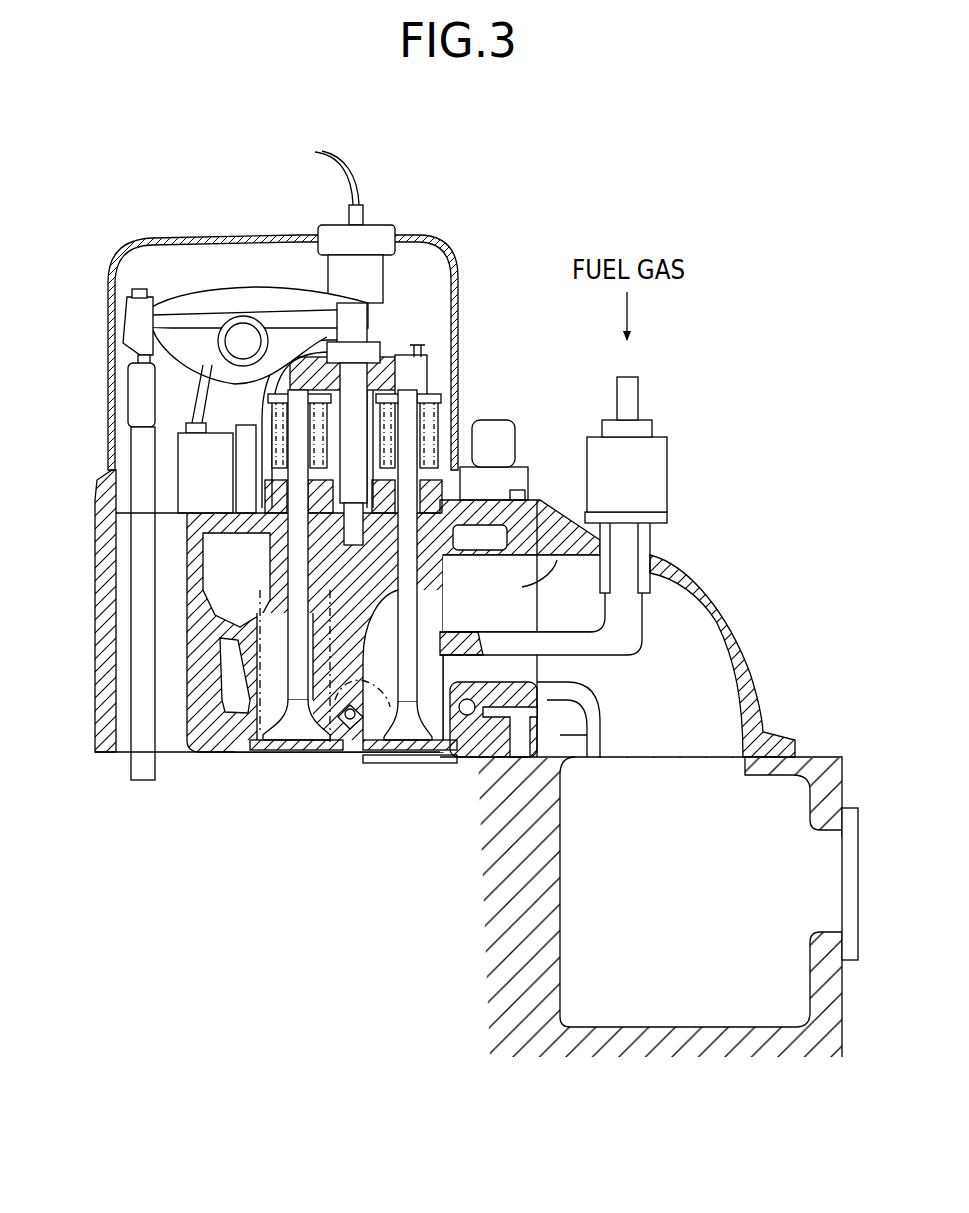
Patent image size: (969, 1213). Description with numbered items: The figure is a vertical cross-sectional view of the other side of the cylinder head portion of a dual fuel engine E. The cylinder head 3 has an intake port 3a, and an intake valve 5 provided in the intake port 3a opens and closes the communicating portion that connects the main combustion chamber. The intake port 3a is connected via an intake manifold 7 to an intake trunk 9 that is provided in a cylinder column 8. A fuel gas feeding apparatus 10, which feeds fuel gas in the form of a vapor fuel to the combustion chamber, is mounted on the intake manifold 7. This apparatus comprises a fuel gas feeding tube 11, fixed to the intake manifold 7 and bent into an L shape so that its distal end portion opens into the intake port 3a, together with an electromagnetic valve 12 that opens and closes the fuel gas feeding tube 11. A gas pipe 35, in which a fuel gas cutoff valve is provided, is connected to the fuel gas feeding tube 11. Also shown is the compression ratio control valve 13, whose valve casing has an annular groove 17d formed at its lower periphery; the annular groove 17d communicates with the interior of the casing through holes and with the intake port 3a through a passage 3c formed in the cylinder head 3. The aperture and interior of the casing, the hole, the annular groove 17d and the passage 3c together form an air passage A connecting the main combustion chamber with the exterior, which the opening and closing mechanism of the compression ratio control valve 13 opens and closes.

The cylinder head 3 is at (103, 601).
The intake port 3a is at (557, 560).
The passage 3c is at (397, 752).
The intake valve 5 is at (295, 728).
The intake manifold 7 is at (717, 600).
The cylinder column 8 is at (822, 1002).
The intake trunk 9 is at (793, 877).
The fuel gas feeding apparatus 10 is at (688, 494).
The fuel gas feeding tube 11 is at (630, 655).
The electromagnetic valve 12 is at (660, 458).
The compression ratio control valve 13 is at (207, 733).
The annular groove 17d is at (342, 745).
The gas pipe 35 is at (620, 397).
The dual fuel engine E is at (88, 528).
The air passage A is at (412, 842).